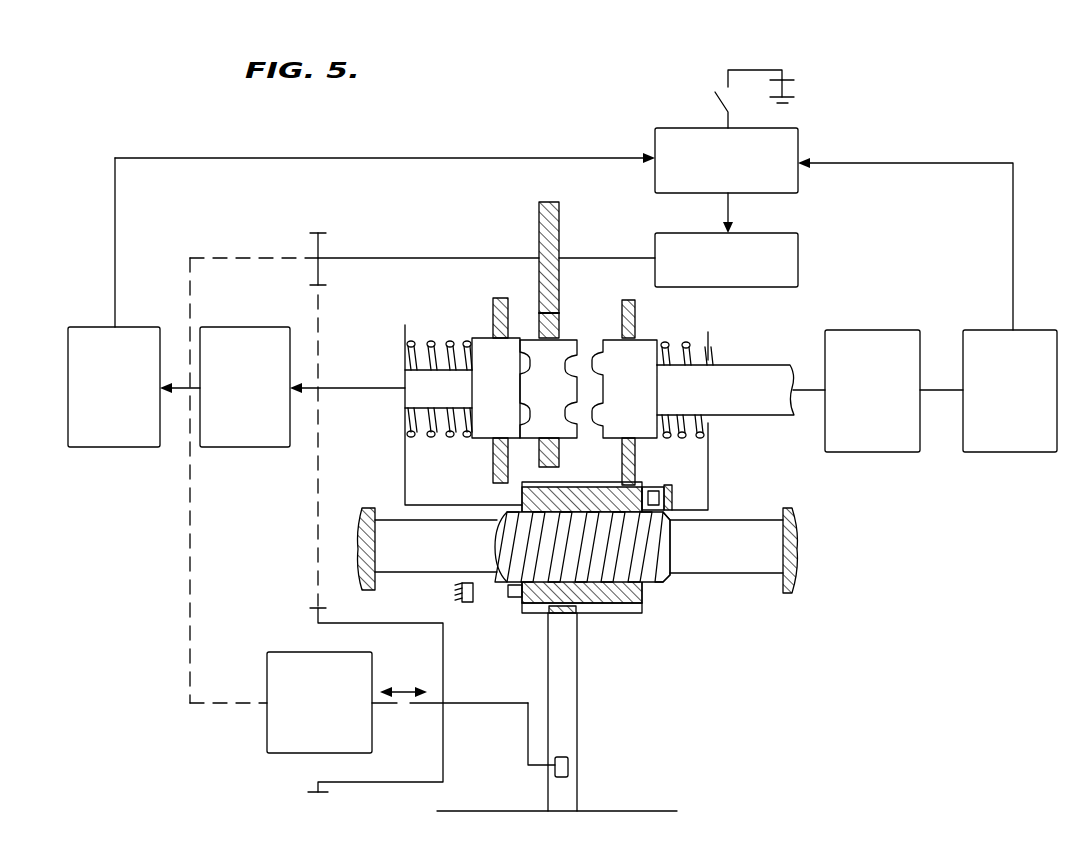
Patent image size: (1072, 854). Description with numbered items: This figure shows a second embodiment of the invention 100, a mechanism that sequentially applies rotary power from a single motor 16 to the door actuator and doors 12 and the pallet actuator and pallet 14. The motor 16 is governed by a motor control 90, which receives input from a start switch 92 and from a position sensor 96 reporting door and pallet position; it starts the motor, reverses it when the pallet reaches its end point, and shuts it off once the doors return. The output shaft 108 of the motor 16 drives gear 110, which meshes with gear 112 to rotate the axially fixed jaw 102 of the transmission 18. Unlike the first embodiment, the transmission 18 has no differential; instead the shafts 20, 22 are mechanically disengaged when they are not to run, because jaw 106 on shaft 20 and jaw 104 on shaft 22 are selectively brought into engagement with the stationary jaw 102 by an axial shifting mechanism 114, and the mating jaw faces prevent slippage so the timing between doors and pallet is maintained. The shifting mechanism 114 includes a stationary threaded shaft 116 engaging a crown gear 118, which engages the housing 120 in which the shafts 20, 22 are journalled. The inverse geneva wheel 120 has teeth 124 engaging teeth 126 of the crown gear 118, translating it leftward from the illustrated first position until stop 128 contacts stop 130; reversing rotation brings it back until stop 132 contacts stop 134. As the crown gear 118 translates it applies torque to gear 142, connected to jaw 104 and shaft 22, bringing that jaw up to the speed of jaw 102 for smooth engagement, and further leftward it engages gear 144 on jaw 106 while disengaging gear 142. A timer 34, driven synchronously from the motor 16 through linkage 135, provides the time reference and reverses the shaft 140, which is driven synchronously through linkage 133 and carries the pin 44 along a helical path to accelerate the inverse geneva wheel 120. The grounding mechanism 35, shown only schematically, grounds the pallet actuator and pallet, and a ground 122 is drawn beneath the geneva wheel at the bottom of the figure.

The second embodiment of the invention 100 is at (475, 140).
The motor control 90 is at (671, 128).
The start switch 92 is at (718, 88).
The motor 16 is at (798, 260).
The output shaft 108 is at (620, 258).
The linkage 135 is at (190, 548).
The linkage 133 is at (318, 515).
The pallet position sensor 96 is at (90, 327).
The pallet actuator and pallet 14 is at (258, 327).
The door actuator and doors 12 is at (893, 330).
The timer 34 is at (288, 652).
The shaft 140 is at (461, 703).
The inverse geneva wheel 120 is at (405, 452).
The axial shifting mechanism 114 is at (432, 315).
The shaft 20 is at (430, 395).
The jaw 106 is at (498, 388).
The transmission 18 is at (588, 357).
The jaw 102 is at (560, 337).
The jaw 104 is at (624, 389).
The shaft 22 is at (750, 365).
The gear 110 is at (539, 240).
The gear 112 is at (540, 325).
The gear 144 is at (493, 463).
The gear 142 is at (622, 463).
The stop 132 is at (646, 487).
The stop 134 is at (670, 485).
The crown gear 118 is at (527, 613).
The teeth 126 is at (641, 613).
The grounding mechanism 35 is at (597, 677).
The stationary threaded shaft 116 is at (403, 573).
The stop 130 is at (473, 602).
The stop 128 is at (510, 598).
The teeth 124 is at (576, 613).
The pin 44 is at (568, 765).
The base 122 is at (479, 810).